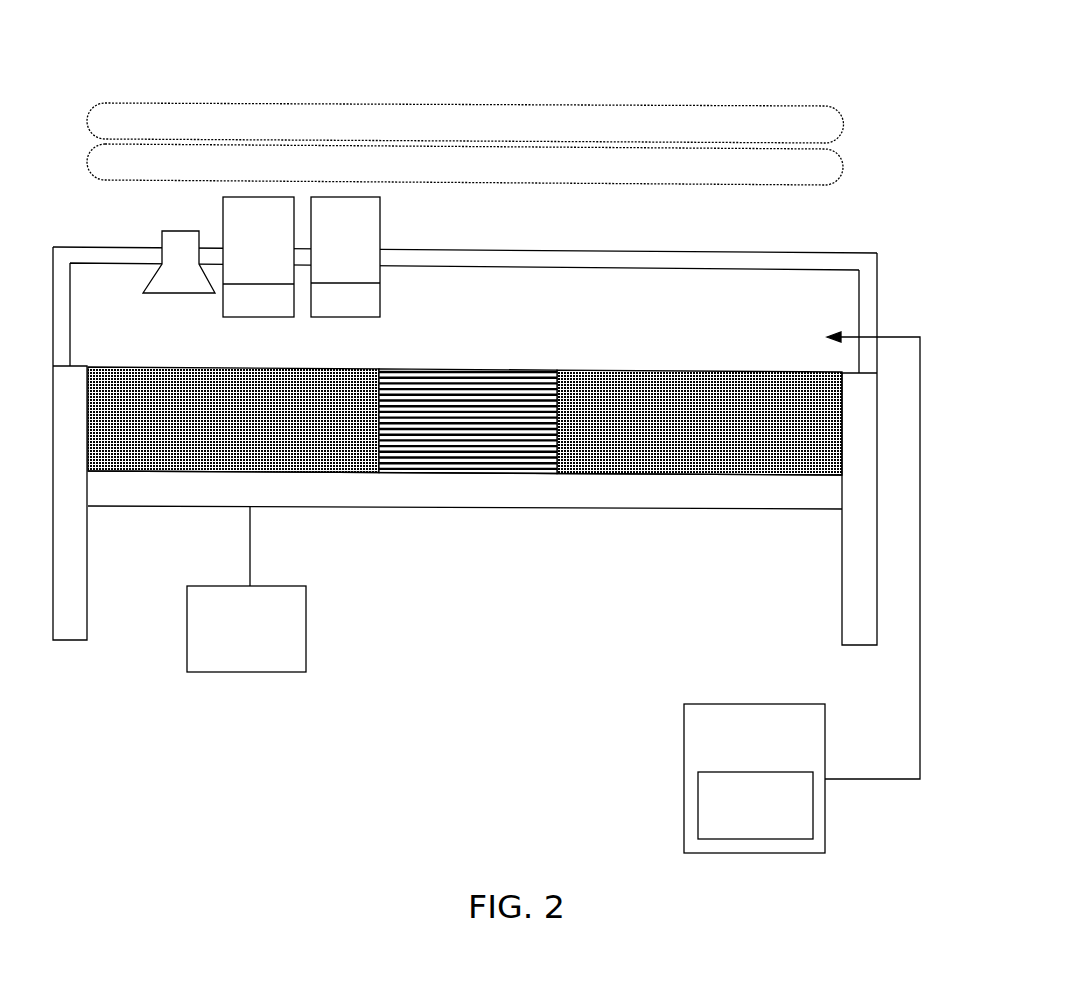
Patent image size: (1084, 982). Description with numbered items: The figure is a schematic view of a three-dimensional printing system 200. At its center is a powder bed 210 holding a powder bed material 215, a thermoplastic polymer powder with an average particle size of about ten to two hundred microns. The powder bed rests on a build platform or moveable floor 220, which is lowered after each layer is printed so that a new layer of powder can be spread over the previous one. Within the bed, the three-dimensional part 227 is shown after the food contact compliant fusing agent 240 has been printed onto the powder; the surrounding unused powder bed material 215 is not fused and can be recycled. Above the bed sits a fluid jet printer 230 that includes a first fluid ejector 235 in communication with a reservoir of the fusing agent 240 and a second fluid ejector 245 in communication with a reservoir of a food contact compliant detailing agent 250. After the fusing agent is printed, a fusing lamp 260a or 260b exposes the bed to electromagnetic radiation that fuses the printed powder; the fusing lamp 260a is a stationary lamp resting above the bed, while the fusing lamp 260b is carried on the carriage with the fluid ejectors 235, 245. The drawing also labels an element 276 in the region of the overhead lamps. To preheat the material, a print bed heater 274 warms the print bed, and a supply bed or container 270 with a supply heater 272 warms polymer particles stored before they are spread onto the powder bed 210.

The three-dimensional printing system 200 is at (155, 83).
The powder bed 210 is at (465, 446).
The powder bed material 215 is at (697, 388).
The build platform or moveable floor 220 is at (583, 493).
The three-dimensional part 227 is at (520, 393).
The fluid jet printer 230 is at (843, 232).
The first fluid ejector 235 is at (217, 322).
The food contact compliant fusing agent 240 is at (278, 271).
The second fluid ejector 245 is at (415, 292).
The food contact compliant detailing agent 250 is at (363, 268).
The fusing lamp 260a is at (548, 165).
The fusing lamp 260b is at (173, 248).
The supply bed or container 270 is at (774, 747).
The supply heater 272 is at (774, 818).
The print bed heater 274 is at (265, 641).
The upper tube 276 is at (480, 128).